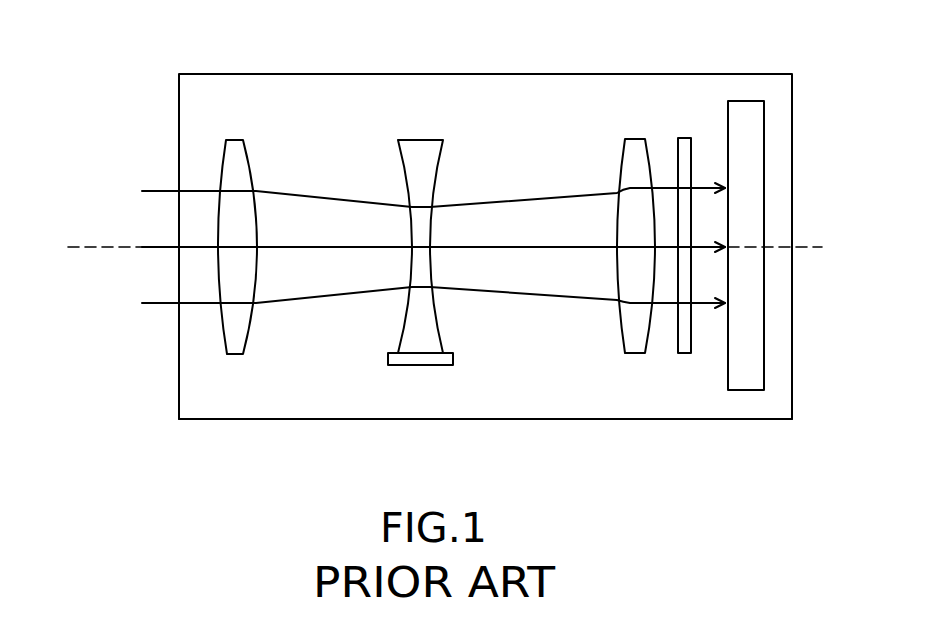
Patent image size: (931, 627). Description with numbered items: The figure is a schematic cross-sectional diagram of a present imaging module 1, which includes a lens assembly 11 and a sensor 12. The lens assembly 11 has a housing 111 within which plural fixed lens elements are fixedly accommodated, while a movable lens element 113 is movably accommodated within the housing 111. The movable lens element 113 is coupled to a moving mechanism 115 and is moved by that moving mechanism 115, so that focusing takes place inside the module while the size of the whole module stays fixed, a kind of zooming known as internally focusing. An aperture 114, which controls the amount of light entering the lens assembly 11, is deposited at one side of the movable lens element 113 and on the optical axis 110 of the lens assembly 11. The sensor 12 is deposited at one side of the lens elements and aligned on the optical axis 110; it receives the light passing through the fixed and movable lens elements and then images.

The imaging module 1 is at (676, 33).
The lens assembly 11 is at (328, 65).
The sensor 12 is at (753, 178).
The optical axis 110 is at (117, 245).
The housing 111 is at (288, 418).
The movable lens element 113 is at (423, 152).
The aperture 114 is at (685, 340).
The moving mechanism 115 is at (412, 358).